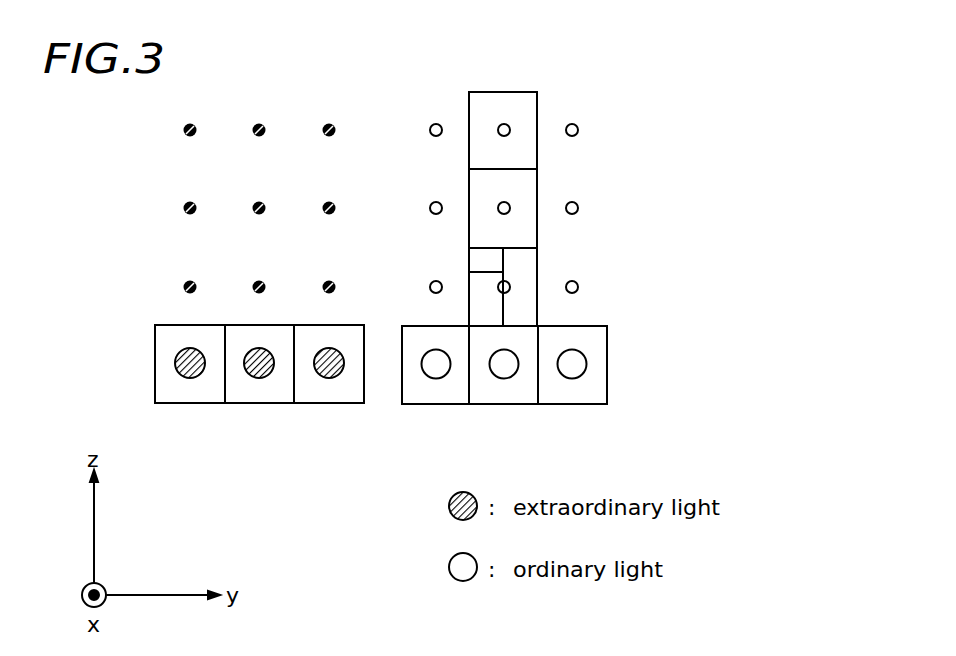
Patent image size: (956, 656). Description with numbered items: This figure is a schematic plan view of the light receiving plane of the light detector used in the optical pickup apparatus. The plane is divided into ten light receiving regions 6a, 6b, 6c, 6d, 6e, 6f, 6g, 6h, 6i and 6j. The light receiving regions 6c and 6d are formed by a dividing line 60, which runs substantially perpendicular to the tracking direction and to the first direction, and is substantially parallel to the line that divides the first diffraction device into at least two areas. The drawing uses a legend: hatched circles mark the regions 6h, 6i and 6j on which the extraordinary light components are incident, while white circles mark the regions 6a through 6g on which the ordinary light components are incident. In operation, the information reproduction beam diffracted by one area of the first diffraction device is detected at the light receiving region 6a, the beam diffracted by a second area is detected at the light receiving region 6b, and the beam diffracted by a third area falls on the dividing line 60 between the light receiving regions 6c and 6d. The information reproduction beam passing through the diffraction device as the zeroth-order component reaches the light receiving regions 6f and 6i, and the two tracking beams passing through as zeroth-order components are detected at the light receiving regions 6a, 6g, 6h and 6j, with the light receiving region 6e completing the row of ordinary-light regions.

The light receiving region 6a is at (530, 108).
The light receiving region 6b is at (530, 186).
The light receiving region 6c is at (530, 254).
The light receiving region 6d is at (498, 304).
The light receiving region 6e is at (572, 404).
The light receiving region 6f is at (504, 404).
The light receiving region 6g is at (436, 404).
The light receiving region 6h is at (329, 403).
The light receiving region 6i is at (259, 403).
The light receiving region 6j is at (190, 403).
The dividing line 60 is at (469, 272).